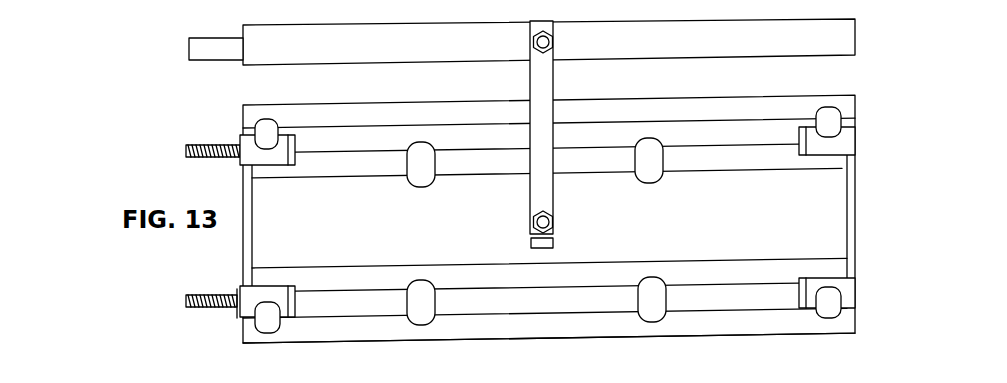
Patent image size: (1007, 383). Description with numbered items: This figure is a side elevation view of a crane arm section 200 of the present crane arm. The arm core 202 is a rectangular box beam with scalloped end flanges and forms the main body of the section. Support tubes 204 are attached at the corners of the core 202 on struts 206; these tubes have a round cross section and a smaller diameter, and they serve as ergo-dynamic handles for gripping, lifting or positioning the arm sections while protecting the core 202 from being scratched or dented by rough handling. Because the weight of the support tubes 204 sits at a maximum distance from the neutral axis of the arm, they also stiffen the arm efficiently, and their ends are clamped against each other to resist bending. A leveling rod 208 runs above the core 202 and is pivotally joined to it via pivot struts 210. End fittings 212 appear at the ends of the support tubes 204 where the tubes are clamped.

The mounting assembly 200 is at (546, 181).
The arm core 202 is at (822, 207).
The support tubes 204 is at (850, 316).
The struts 206 is at (835, 121).
The leveling rod 208 is at (843, 40).
The pivot struts 210 is at (543, 78).
The end blocks 212 is at (848, 139).